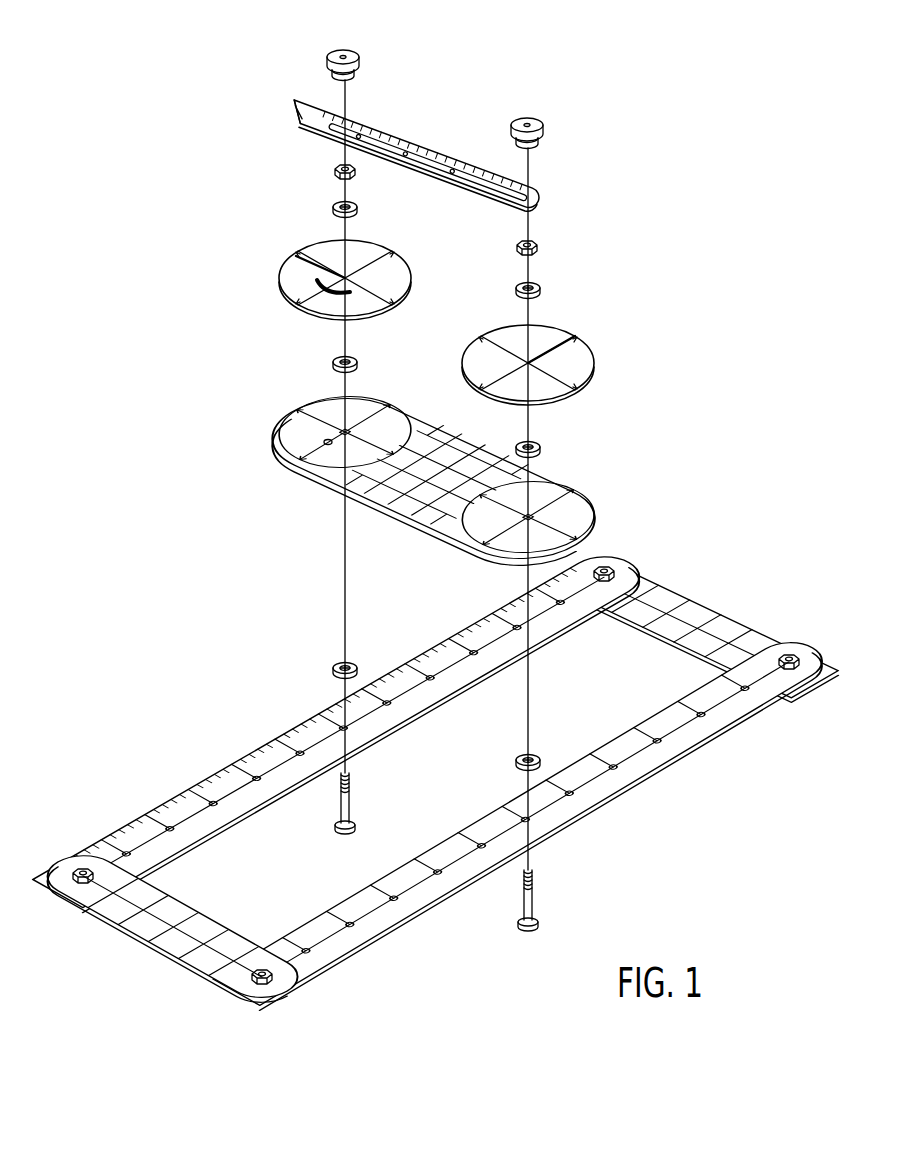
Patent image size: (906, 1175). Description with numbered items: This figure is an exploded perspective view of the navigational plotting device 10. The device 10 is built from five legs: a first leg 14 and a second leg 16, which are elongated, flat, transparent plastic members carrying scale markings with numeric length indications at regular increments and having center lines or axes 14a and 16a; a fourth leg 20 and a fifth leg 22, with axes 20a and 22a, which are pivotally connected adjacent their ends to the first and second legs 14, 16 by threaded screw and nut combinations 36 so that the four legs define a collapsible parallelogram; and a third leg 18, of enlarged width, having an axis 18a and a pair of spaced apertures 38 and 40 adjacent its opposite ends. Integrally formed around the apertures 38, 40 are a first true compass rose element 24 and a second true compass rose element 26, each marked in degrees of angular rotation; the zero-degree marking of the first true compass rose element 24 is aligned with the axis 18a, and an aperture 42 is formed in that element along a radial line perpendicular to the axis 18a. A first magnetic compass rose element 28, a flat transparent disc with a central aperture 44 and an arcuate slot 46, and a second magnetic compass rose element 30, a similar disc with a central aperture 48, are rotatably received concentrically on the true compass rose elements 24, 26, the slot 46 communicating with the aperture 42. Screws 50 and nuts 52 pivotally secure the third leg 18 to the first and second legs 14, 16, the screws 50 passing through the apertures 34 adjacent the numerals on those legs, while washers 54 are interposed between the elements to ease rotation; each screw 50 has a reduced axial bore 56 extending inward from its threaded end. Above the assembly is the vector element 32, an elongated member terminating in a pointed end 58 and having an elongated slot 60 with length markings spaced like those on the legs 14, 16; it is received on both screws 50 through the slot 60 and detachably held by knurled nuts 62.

The device 10 is at (702, 504).
The first leg 14 is at (344, 731).
The axis of first leg 14a is at (250, 808).
The second leg 16 is at (524, 824).
The axis of second leg 16a is at (355, 945).
The third leg 18 is at (445, 487).
The axis of third leg 18a is at (436, 474).
The fourth leg 20 is at (173, 928).
The axis of fourth leg 20a is at (160, 958).
The fifth leg 22 is at (696, 630).
The axis of fifth leg 22a is at (720, 640).
The first true compass rose element 24 is at (345, 432).
The second true compass rose element 26 is at (528, 517).
The first magnetic compass rose element 28 is at (313, 289).
The second magnetic compass rose element 30 is at (558, 364).
The vector element 32 is at (391, 132).
The apertures 34 is at (168, 830).
The threaded screw and nut combinations 36 is at (793, 655).
The aperture 38 is at (345, 432).
The aperture 40 is at (528, 517).
The aperture 42 is at (328, 447).
The central aperture 44 is at (312, 258).
The arcuate slot 46 is at (304, 292).
The central aperture 48 is at (572, 348).
The screws 50 is at (473, 845).
The nuts 52 is at (334, 173).
The washers 54 is at (358, 207).
The reduced axial bores 56 is at (351, 773).
The pointed end 58 is at (322, 106).
The elongated slot 60 is at (427, 162).
The knurled nuts 62 is at (360, 62).